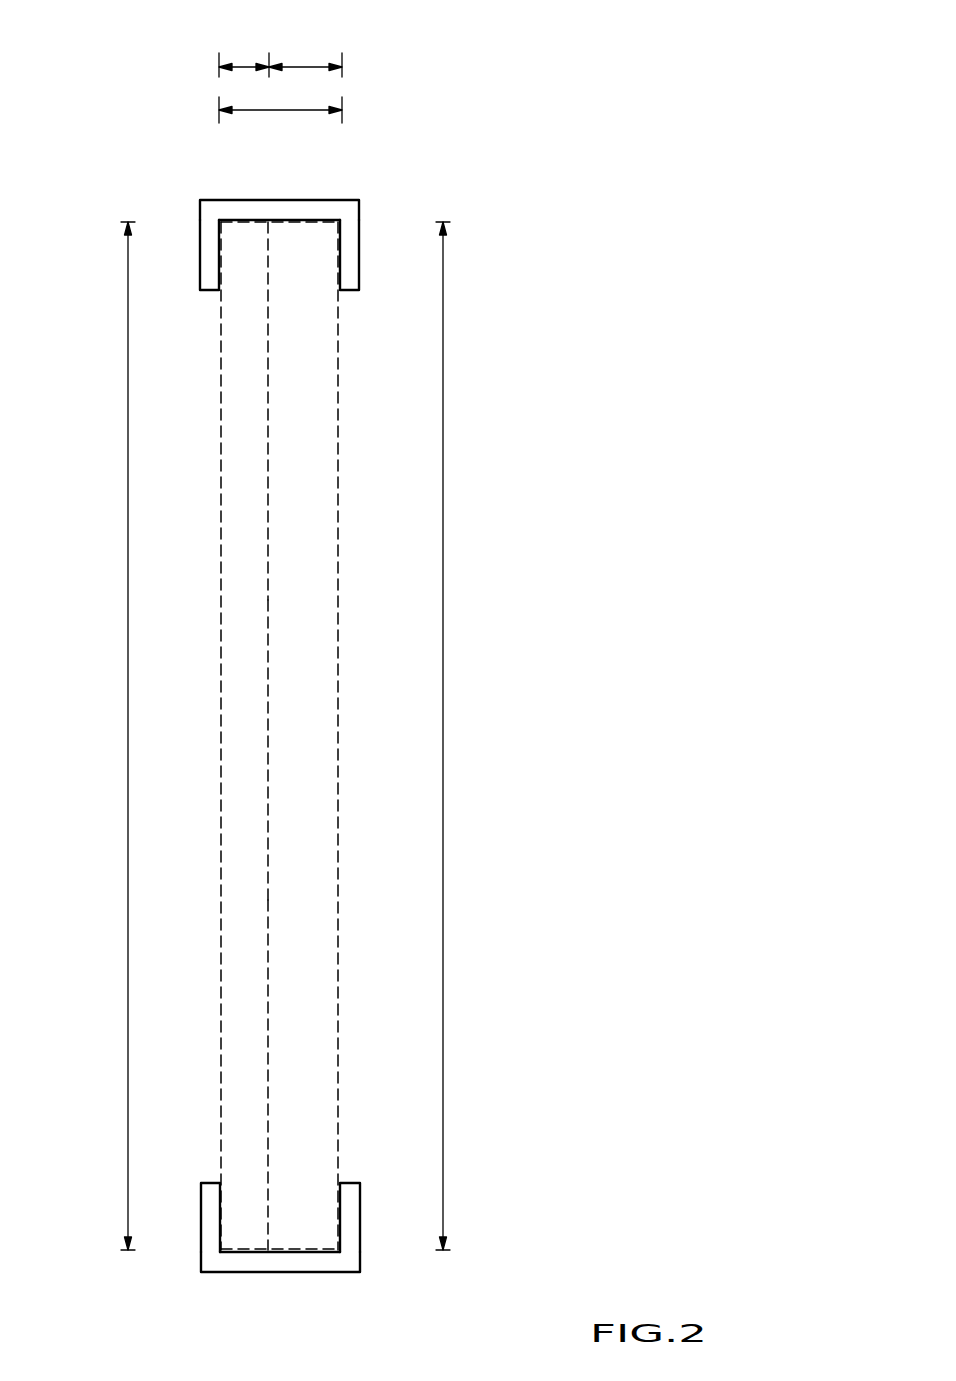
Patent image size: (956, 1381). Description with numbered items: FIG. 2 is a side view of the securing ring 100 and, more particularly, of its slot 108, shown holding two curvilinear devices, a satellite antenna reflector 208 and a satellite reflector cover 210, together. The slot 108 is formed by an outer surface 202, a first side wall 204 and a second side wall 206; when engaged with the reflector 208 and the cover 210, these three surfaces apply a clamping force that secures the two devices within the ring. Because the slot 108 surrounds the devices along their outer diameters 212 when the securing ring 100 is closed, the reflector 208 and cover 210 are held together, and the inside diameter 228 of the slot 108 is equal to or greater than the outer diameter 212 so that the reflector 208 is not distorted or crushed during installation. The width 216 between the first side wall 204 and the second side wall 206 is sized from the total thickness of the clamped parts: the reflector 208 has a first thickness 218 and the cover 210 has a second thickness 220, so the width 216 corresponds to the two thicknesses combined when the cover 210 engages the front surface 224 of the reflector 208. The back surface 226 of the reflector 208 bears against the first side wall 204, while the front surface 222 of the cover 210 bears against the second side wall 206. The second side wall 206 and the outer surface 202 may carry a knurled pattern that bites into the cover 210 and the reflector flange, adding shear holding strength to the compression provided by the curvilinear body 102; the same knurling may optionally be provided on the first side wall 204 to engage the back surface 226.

The securing ring 100 is at (177, 92).
The curvilinear body 102 is at (210, 186).
The slot 108 is at (328, 300).
The outer surface 202 is at (338, 199).
The first side wall 204 is at (360, 218).
The second side wall 206 is at (200, 233).
The satellite antenna reflector 208 is at (328, 466).
The satellite reflector cover 210 is at (225, 421).
The outer diameter 212 is at (128, 700).
The width 216 is at (277, 112).
The first thickness 218 is at (306, 63).
The second thickness 220 is at (245, 63).
The front surface of the satellite reflector cover 222 is at (222, 742).
The front surface of the satellite antenna reflector 224 is at (268, 350).
The back surface of the satellite antenna reflector 226 is at (338, 1075).
The inside diameter 228 is at (443, 730).